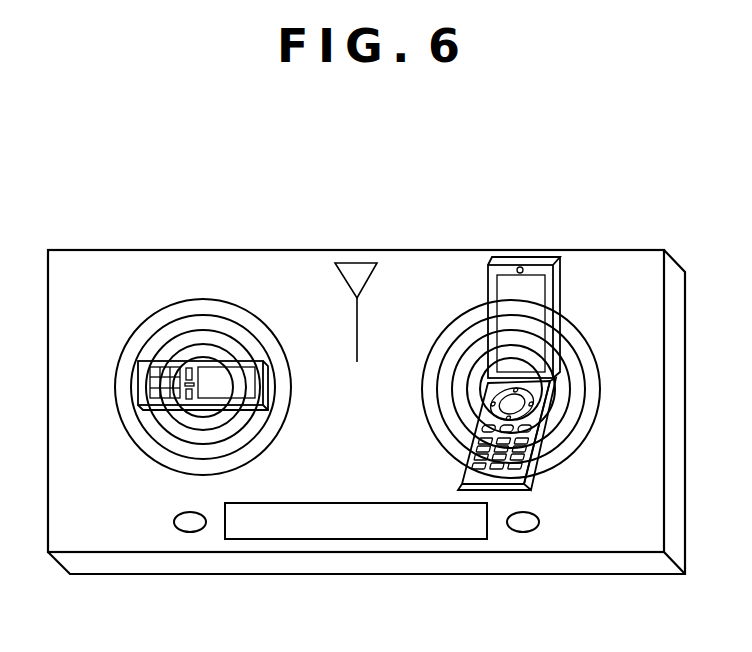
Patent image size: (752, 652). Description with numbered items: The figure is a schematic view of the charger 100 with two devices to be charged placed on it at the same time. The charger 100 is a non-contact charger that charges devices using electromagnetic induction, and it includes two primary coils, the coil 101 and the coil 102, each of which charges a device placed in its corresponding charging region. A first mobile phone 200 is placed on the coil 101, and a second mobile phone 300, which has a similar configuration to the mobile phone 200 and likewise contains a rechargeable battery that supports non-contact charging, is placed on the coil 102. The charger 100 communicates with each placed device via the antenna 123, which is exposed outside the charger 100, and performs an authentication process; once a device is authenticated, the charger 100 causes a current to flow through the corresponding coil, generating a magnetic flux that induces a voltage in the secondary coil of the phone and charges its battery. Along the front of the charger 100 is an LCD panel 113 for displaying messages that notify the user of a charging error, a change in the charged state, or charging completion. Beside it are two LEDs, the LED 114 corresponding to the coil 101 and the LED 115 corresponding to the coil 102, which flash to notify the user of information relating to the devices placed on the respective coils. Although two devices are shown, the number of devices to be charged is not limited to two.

The charger 100 is at (589, 186).
The coil 101 is at (120, 354).
The coil 102 is at (593, 356).
The LCD panel 113 is at (355, 540).
The LED 114 is at (190, 532).
The LED 115 is at (523, 532).
The antenna 123 is at (357, 263).
The mobile phone 200 is at (263, 361).
The mobile phone 300 is at (510, 257).